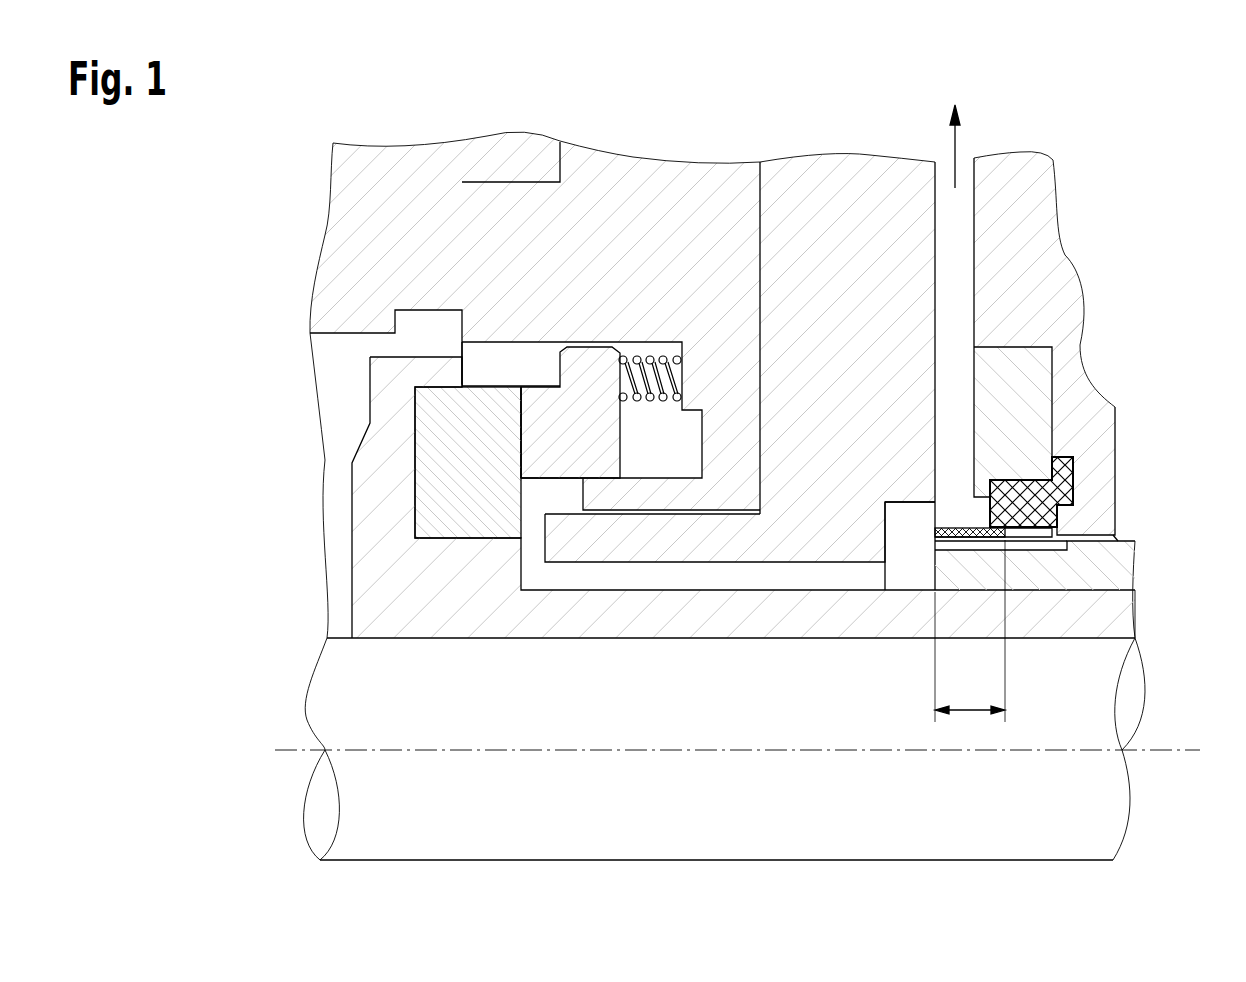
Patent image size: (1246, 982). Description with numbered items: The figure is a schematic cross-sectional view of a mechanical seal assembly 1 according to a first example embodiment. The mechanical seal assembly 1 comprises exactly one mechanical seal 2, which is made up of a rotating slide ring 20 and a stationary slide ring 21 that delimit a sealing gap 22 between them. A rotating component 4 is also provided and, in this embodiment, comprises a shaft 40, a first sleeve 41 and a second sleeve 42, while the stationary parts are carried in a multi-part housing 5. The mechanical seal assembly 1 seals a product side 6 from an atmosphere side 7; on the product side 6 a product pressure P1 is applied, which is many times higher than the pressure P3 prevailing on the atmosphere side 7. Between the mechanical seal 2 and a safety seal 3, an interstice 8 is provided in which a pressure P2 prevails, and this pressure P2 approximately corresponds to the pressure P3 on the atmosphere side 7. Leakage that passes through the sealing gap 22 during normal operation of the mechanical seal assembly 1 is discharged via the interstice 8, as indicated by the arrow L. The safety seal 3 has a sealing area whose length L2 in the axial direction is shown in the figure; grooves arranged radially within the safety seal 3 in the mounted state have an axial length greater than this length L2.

The mechanical seal assembly 1 is at (252, 227).
The mechanical seal 2 is at (555, 324).
The stationary slide ring 21 is at (590, 368).
The sealing gap 22 is at (521, 437).
The rotating slide ring 20 is at (437, 500).
The safety seal 3 is at (1063, 496).
The rotating component 4 is at (1146, 620).
The shaft 40 is at (1085, 695).
The first sleeve 41 is at (740, 608).
The second sleeve 42 is at (1110, 568).
The multi-part housing 5 is at (797, 190).
The product side 6 is at (270, 396).
The atmosphere side 7 is at (1225, 420).
The interstice 8 is at (908, 547).
The arrow indicating leakage discharge L is at (955, 143).
The length of the sealing area of the safety seal L2 is at (970, 631).
The product pressure P1 is at (343, 372).
The pressure in the interstice P2 is at (957, 427).
The pressure on the atmosphere side P3 is at (1190, 496).